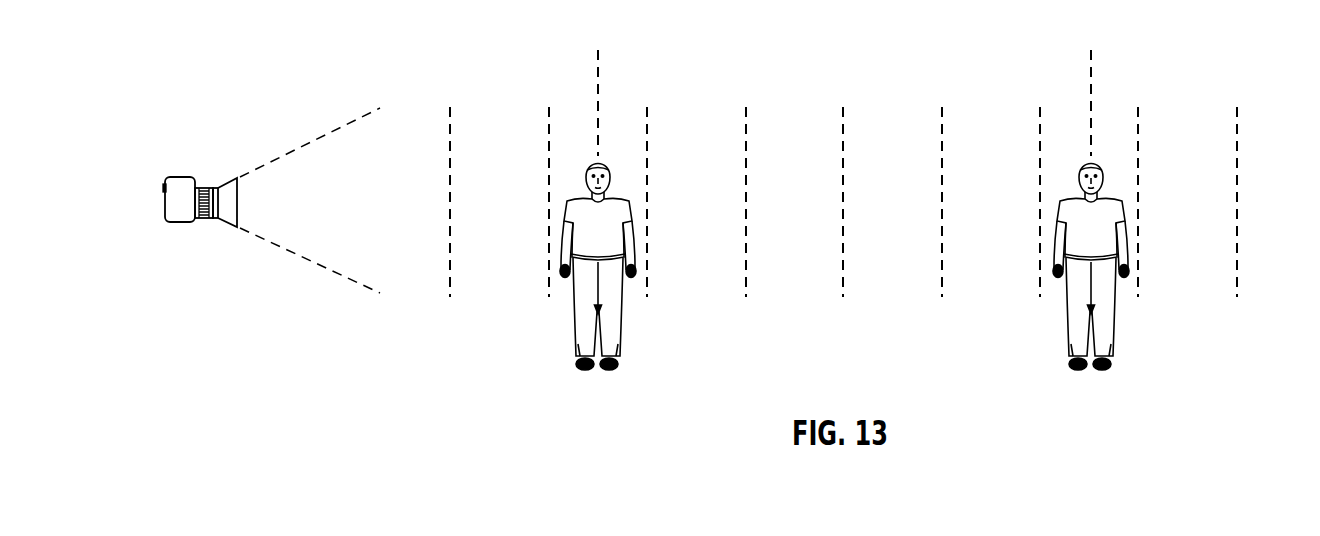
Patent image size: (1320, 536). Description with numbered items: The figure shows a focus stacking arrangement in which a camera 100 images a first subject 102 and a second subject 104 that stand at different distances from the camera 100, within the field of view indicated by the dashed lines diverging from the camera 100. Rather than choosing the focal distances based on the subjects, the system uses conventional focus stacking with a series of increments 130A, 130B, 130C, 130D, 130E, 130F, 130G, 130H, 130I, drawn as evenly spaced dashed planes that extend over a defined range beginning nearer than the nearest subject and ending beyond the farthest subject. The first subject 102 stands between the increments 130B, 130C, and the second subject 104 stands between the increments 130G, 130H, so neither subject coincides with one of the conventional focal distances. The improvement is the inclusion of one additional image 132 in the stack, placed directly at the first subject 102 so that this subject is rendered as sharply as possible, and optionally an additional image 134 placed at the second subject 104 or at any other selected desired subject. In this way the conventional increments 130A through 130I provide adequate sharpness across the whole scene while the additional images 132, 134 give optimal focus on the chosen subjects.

The camera 100 is at (178, 222).
The first subject 102 is at (621, 308).
The second subject 104 is at (1114, 308).
The focus stacking increment 130A is at (480, 92).
The focus stacking increment 130B is at (580, 92).
The focus stacking increment 130C is at (678, 92).
The focus stacking increment 130D is at (778, 92).
The focus stacking increment 130E is at (874, 92).
The focus stacking increment 130F is at (972, 92).
The focus stacking increment 130G is at (1072, 92).
The focus stacking increment 130H is at (1170, 92).
The focus stacking increment 130I is at (1263, 92).
The additional image 132 is at (618, 42).
The additional image 134 is at (1112, 42).